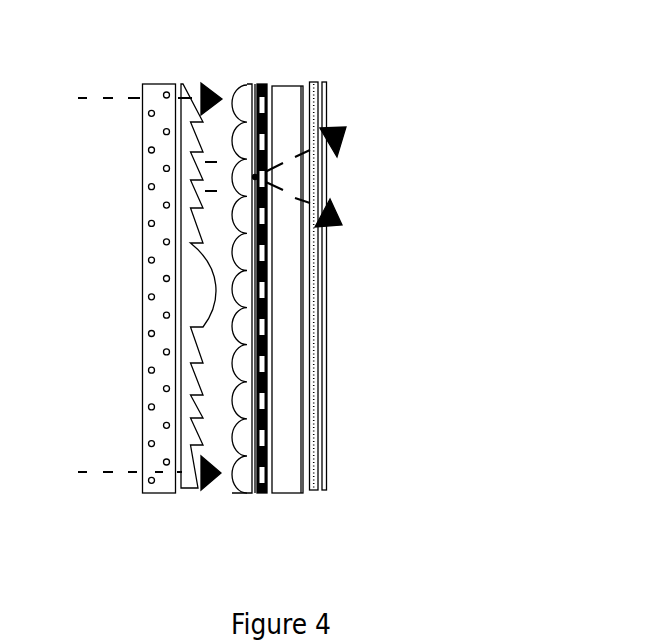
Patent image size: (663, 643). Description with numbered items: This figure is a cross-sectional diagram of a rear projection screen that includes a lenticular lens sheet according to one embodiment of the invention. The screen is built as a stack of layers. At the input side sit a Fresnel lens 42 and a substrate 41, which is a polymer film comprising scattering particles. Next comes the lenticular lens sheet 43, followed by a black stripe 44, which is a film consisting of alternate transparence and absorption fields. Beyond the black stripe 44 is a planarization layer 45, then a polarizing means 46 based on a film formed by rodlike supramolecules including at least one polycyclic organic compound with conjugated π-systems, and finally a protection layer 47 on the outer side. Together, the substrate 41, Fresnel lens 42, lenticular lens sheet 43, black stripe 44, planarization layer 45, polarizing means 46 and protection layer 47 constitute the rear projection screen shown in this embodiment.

The substrate 41 is at (157, 92).
The Fresnel lens 42 is at (185, 88).
The lenticular lens sheet 43 is at (243, 478).
The black stripe 44 is at (265, 493).
The planarization layer 45 is at (283, 480).
The polarizing means 46 is at (320, 491).
The protection layer 47 is at (325, 403).